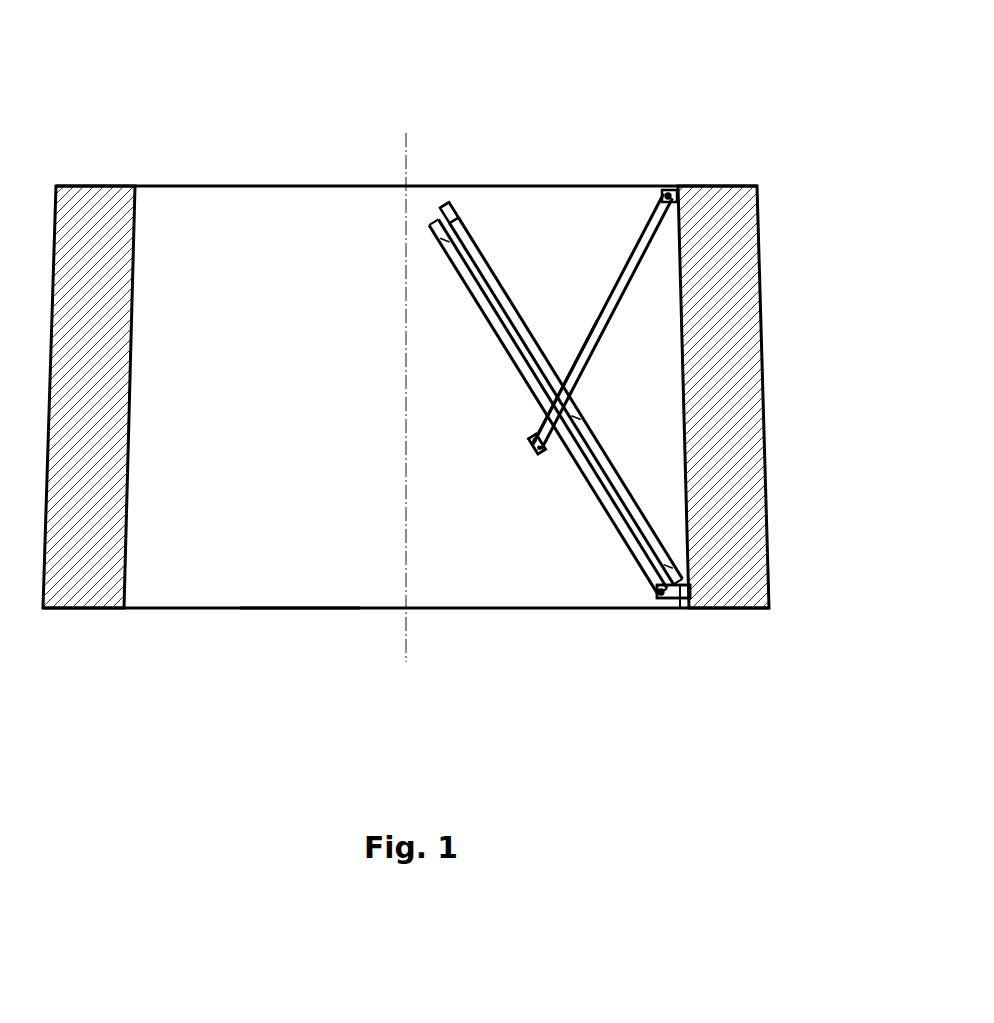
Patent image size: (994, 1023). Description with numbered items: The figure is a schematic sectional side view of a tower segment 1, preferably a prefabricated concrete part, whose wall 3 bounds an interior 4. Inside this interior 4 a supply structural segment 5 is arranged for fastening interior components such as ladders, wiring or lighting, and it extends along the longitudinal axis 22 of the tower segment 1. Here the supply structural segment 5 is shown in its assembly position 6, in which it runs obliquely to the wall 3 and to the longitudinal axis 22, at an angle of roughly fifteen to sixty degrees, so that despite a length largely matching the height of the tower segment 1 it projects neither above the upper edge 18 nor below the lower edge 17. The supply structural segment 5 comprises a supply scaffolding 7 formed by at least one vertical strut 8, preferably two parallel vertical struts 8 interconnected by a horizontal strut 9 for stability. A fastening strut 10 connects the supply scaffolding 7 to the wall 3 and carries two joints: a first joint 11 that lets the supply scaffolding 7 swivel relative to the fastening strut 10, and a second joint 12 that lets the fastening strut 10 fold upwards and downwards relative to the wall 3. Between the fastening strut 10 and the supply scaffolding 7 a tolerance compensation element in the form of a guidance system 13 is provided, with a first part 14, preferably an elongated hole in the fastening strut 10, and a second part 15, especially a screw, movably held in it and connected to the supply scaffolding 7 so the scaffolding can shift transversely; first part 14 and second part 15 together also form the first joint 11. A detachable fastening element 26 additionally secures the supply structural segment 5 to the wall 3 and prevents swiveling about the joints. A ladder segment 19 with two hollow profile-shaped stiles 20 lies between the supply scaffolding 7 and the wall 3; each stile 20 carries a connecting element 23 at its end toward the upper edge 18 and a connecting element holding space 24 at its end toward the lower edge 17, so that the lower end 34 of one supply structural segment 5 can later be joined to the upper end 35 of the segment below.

The tower segment 1 is at (128, 152).
The wall 3 is at (710, 198).
The interior 4 is at (215, 582).
The supply structural segment 5 is at (552, 518).
The assembly position 6 is at (549, 204).
The supply scaffolding 7 is at (483, 356).
The vertical strut 8 is at (428, 222).
The horizontal strut 9 is at (546, 452).
The fastening strut 10 is at (628, 270).
The first joint 11 is at (535, 452).
The second joint 12 is at (670, 188).
The guidance system 13 is at (525, 440).
The first part 14 is at (524, 434).
The second part 15 is at (530, 443).
The lower edge 17 is at (295, 609).
The upper edge 18 is at (205, 185).
The ladder segment 19 is at (445, 199).
The stile 20 is at (478, 256).
The longitudinal axis 22 is at (403, 133).
The connecting element 23 is at (455, 200).
The connecting element holding space 24 is at (690, 597).
The fastening element 26 is at (680, 598).
The lower end 34 is at (682, 563).
The upper end 35 is at (460, 200).